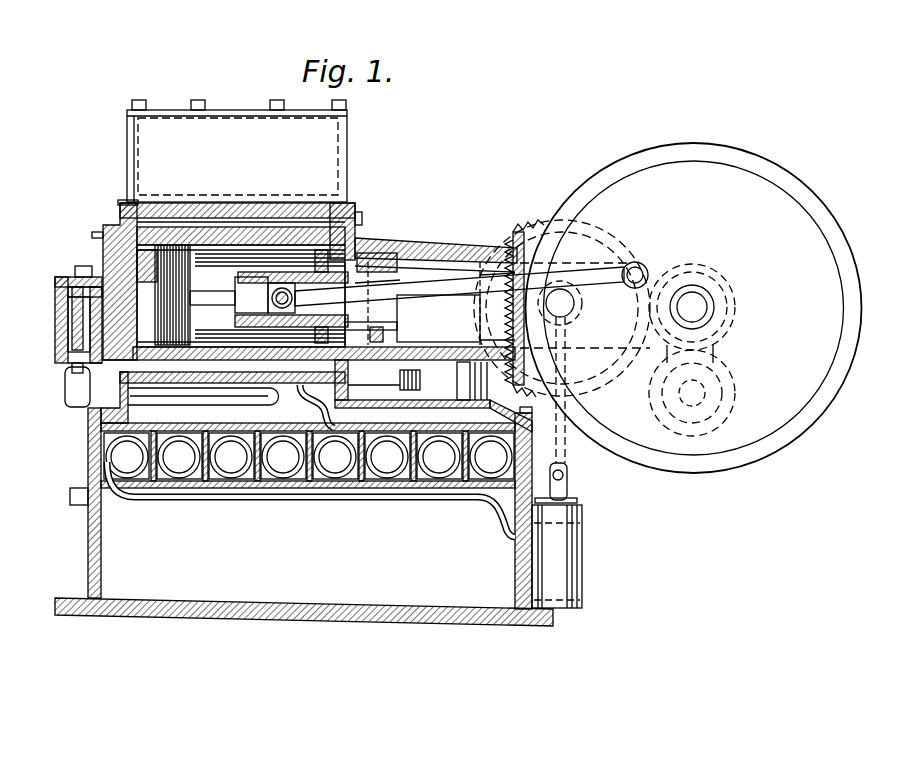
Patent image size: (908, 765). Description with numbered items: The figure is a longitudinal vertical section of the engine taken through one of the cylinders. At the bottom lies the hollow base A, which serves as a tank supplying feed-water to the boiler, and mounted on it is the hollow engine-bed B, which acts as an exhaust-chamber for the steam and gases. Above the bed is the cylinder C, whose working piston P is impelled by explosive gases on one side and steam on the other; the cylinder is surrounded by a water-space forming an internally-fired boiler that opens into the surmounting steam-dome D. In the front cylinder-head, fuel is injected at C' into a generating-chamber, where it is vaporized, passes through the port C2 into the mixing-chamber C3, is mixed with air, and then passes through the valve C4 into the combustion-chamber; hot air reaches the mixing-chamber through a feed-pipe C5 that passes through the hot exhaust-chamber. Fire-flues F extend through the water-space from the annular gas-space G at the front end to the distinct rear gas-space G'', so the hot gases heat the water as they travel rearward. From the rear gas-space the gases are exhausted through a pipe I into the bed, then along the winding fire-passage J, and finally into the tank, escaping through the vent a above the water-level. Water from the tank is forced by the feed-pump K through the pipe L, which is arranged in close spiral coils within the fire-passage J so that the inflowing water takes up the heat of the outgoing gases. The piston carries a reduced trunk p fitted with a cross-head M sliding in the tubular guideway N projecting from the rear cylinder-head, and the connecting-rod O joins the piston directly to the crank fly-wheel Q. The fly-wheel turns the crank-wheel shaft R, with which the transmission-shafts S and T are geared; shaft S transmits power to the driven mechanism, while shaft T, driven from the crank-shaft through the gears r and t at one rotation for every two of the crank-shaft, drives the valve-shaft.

The base A is at (87, 543).
The vent a is at (70, 493).
The engine-bed B is at (100, 416).
The cylinder C is at (290, 301).
The fuel injection point C' is at (78, 233).
The port C2 is at (96, 294).
The mixing-chamber C3 is at (55, 331).
The valve C4 is at (55, 290).
The feed-pipe C5 is at (63, 382).
The steam-dome D is at (237, 151).
The fire-flue F is at (280, 214).
The annular gas-space G is at (115, 188).
The rear gas-space G'' is at (423, 237).
The exhaust pipe I is at (417, 381).
The winding fire-passage J is at (428, 430).
The feed-pump K is at (582, 532).
The feed-water pipe L is at (392, 503).
The cross-head M is at (444, 310).
The guideway N is at (462, 306).
The connecting-rod O is at (462, 284).
The working piston P is at (178, 287).
The reduced trunk p is at (242, 297).
The crank fly-wheel Q is at (697, 308).
The crank-wheel shaft R is at (702, 306).
The gear r is at (710, 276).
The transmission-shaft S is at (700, 393).
The transmission-shaft T is at (580, 308).
The gear t is at (637, 262).